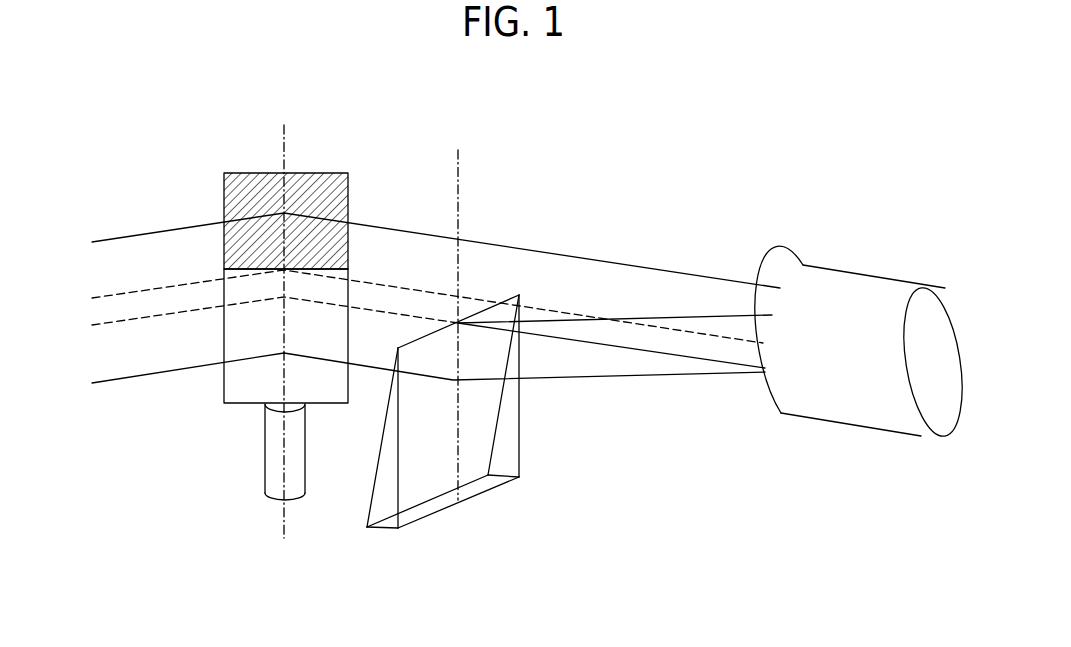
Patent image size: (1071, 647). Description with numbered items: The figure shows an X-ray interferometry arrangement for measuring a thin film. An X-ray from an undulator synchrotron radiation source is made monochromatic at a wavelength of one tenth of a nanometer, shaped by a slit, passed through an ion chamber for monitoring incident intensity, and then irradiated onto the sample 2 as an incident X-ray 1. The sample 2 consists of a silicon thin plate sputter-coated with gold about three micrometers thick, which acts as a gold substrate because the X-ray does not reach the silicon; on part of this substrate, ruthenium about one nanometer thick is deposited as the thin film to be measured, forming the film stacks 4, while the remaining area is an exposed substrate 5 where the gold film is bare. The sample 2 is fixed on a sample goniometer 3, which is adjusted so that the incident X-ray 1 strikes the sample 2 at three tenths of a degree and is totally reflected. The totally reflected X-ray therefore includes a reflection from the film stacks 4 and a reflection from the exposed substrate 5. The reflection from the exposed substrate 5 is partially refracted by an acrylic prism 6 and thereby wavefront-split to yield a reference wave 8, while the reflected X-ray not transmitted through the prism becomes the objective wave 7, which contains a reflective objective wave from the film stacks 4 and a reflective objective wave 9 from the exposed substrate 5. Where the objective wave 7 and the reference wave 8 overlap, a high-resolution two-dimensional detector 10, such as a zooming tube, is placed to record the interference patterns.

The incident X-ray 1 is at (197, 350).
The sample 2 is at (250, 398).
The sample goniometer 3 is at (275, 488).
The film stacks 4 is at (306, 187).
The exposed substrate 5 is at (320, 335).
The acrylic prism 6 is at (433, 482).
The objective wave 7 is at (555, 278).
The reference wave 8 is at (570, 355).
The reflective objective wave 9 is at (665, 340).
The high-resolution two-dimensional detector 10 is at (877, 393).